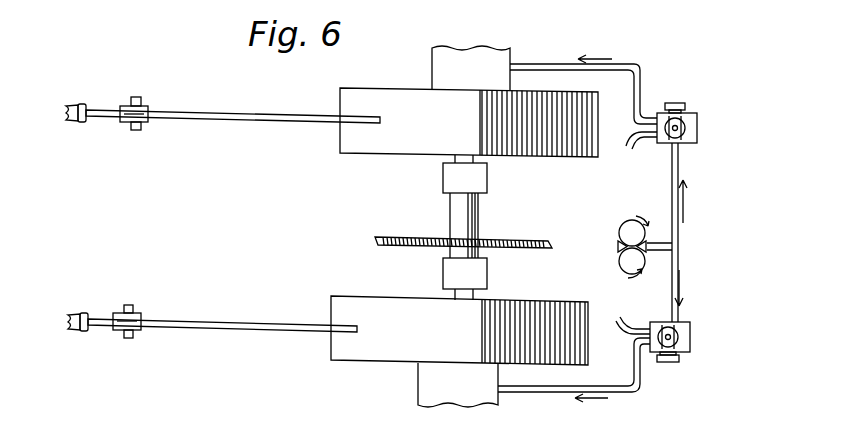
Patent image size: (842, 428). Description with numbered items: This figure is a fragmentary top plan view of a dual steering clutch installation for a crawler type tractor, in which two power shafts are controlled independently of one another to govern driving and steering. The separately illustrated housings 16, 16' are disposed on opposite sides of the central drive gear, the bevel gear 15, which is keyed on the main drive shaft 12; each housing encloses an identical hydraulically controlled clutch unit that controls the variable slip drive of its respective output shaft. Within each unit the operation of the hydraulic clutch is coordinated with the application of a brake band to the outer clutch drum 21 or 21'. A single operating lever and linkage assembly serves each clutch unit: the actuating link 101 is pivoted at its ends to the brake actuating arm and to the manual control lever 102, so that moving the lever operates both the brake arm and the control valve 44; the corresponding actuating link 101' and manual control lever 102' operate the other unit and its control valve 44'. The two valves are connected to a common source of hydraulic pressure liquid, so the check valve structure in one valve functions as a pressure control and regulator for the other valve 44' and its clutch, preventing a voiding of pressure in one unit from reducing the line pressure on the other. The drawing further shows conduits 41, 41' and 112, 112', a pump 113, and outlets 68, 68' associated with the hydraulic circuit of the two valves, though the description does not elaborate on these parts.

The housing 16' is at (469, 101).
The outer clutch drum 21' is at (536, 95).
The upper coolant supply conduit 41' is at (583, 82).
The control valve 44' is at (700, 123).
The upper drain outlet 68' is at (634, 155).
The upper coolant line 112' is at (707, 194).
The lower coolant line 112 is at (706, 284).
The pump 113 is at (617, 256).
The lower drain outlet 68 is at (633, 315).
The control valve 44 is at (693, 342).
The lower coolant supply conduit 41 is at (574, 382).
The outer clutch drum 21 is at (459, 351).
The housing 16 is at (459, 351).
The main drive shaft 12 is at (479, 214).
The bevel gear 15 is at (412, 244).
The actuating link 101' is at (233, 129).
The manual control lever 102' is at (97, 133).
The actuating link 101 is at (222, 338).
The manual control lever 102 is at (93, 344).